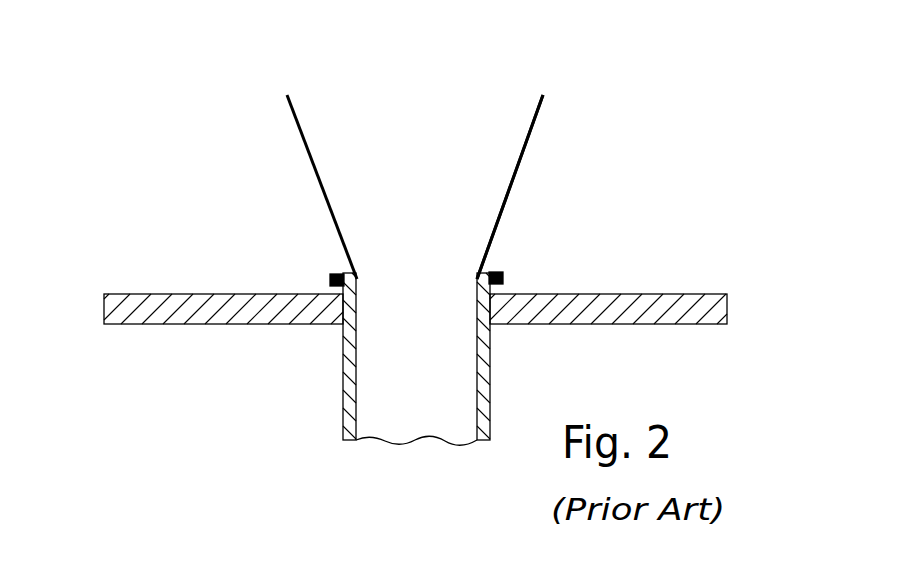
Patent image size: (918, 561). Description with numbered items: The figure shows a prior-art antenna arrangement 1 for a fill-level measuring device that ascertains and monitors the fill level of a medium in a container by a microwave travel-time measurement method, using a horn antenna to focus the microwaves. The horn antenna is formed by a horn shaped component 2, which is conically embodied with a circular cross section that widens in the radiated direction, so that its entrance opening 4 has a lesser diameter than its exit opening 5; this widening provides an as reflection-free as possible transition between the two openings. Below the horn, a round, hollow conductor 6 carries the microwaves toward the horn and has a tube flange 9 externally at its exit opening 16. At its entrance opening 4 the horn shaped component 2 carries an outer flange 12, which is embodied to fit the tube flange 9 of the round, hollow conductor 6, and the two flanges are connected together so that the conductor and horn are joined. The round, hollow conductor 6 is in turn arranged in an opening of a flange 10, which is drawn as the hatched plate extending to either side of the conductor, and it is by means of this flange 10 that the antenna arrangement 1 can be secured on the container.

The antenna arrangement 1 is at (572, 95).
The horn shaped component 2 is at (518, 168).
The entrance opening 4 is at (422, 282).
The exit opening 5 is at (423, 93).
The round, hollow conductor 6 is at (343, 392).
The tube flange 9 is at (500, 290).
The flange 10 is at (162, 310).
The outer flange 12 is at (340, 277).
The exit opening 16 is at (392, 285).